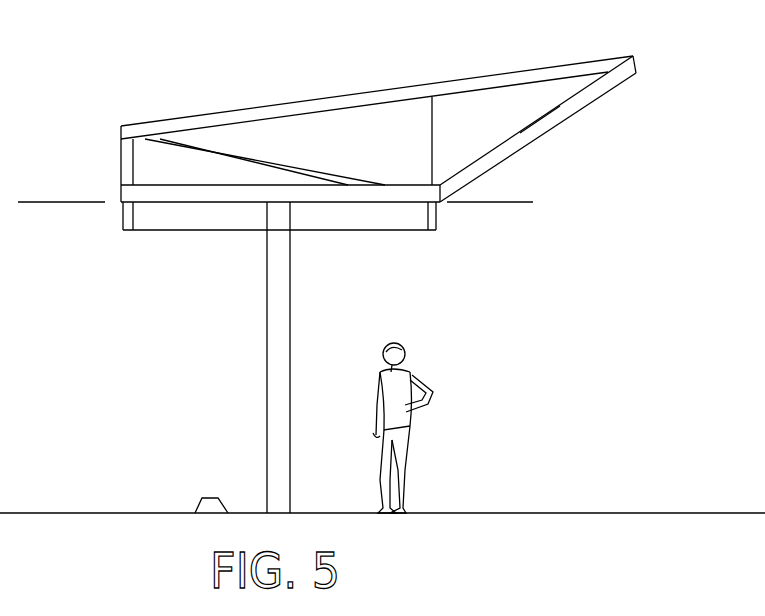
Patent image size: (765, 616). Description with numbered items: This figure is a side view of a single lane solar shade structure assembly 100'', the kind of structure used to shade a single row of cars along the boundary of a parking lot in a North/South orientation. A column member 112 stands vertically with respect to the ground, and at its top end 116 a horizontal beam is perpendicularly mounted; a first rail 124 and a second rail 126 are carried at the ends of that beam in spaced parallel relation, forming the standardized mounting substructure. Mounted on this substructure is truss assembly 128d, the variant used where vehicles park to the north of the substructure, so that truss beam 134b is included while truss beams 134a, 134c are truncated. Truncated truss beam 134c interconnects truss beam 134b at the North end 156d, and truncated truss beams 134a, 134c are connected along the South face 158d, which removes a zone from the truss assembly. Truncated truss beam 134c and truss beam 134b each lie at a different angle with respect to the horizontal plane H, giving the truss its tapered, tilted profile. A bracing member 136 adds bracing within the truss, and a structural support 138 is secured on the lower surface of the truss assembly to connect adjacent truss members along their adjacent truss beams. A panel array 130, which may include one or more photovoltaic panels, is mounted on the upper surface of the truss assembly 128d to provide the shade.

The structure assembly 100'' is at (147, 32).
The column member 112 is at (291, 318).
The top end 116 is at (384, 229).
The first rail 124 is at (438, 216).
The second rail 126 is at (121, 222).
The truss assembly 128d is at (590, 105).
The panel array 130 is at (396, 86).
The truss beam 134a is at (220, 185).
The truss beam 134b is at (518, 133).
The truss beam 134c is at (365, 107).
The bracing member 136 is at (253, 152).
The structural support 138 is at (522, 146).
The North end 156d is at (641, 58).
The South face 158d is at (122, 163).
The horizontal plane H is at (508, 201).